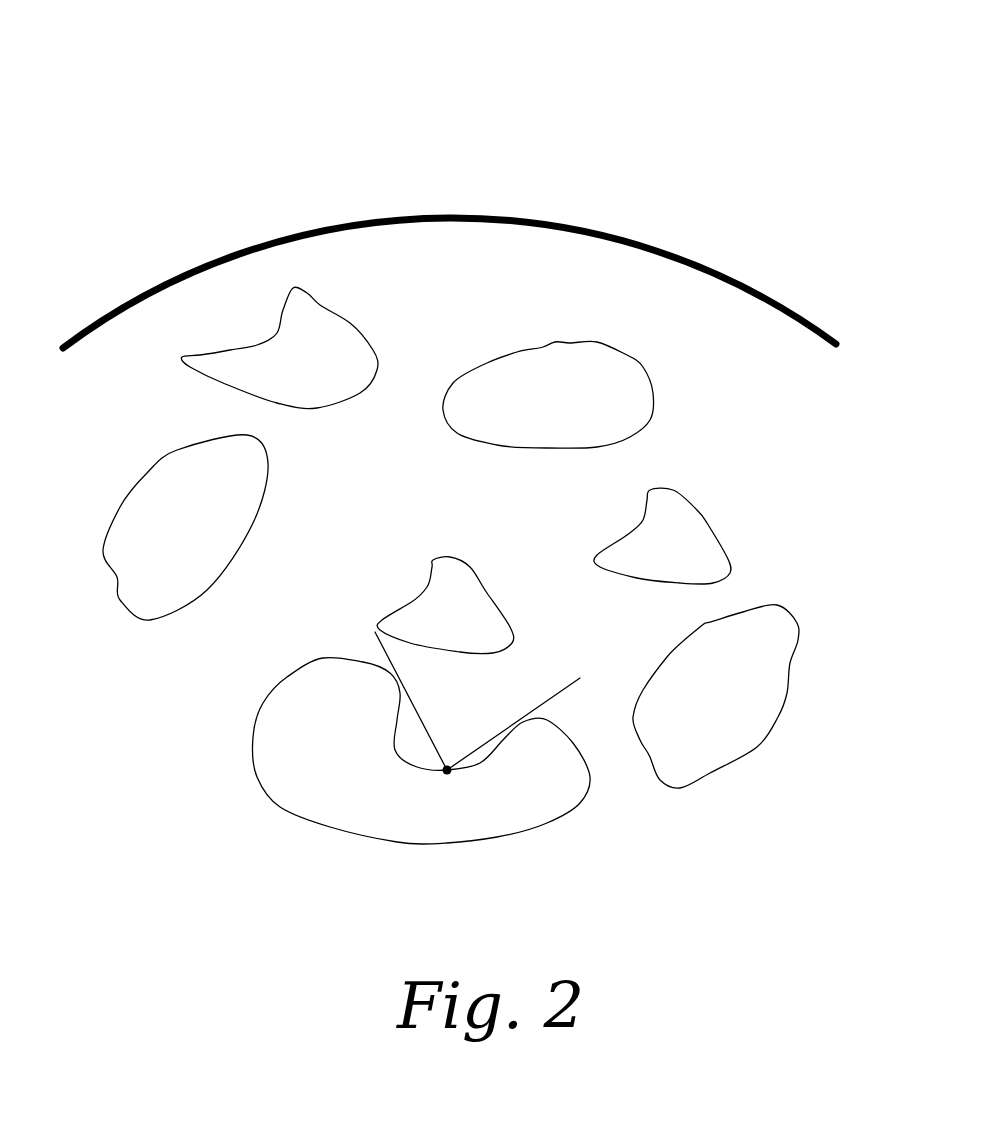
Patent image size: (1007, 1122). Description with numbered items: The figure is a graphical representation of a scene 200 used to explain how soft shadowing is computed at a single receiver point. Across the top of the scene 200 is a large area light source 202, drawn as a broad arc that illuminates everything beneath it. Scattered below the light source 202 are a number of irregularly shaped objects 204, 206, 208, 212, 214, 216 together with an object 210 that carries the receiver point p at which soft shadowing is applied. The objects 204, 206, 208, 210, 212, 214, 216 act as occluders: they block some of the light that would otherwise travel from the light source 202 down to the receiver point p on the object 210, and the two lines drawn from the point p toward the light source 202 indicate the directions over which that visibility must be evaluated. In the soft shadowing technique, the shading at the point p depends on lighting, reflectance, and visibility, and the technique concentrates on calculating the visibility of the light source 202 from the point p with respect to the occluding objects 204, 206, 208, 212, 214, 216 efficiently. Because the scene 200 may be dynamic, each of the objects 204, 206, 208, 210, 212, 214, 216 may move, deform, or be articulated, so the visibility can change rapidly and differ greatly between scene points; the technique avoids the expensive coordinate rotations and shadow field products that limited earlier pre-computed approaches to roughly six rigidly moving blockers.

The scene 200 is at (303, 63).
The large area light source 202 is at (627, 242).
The object 204 is at (467, 561).
The object 206 is at (702, 512).
The object 208 is at (320, 303).
The object 210 is at (252, 750).
The object 212 is at (138, 480).
The object 214 is at (780, 717).
The object 216 is at (652, 380).